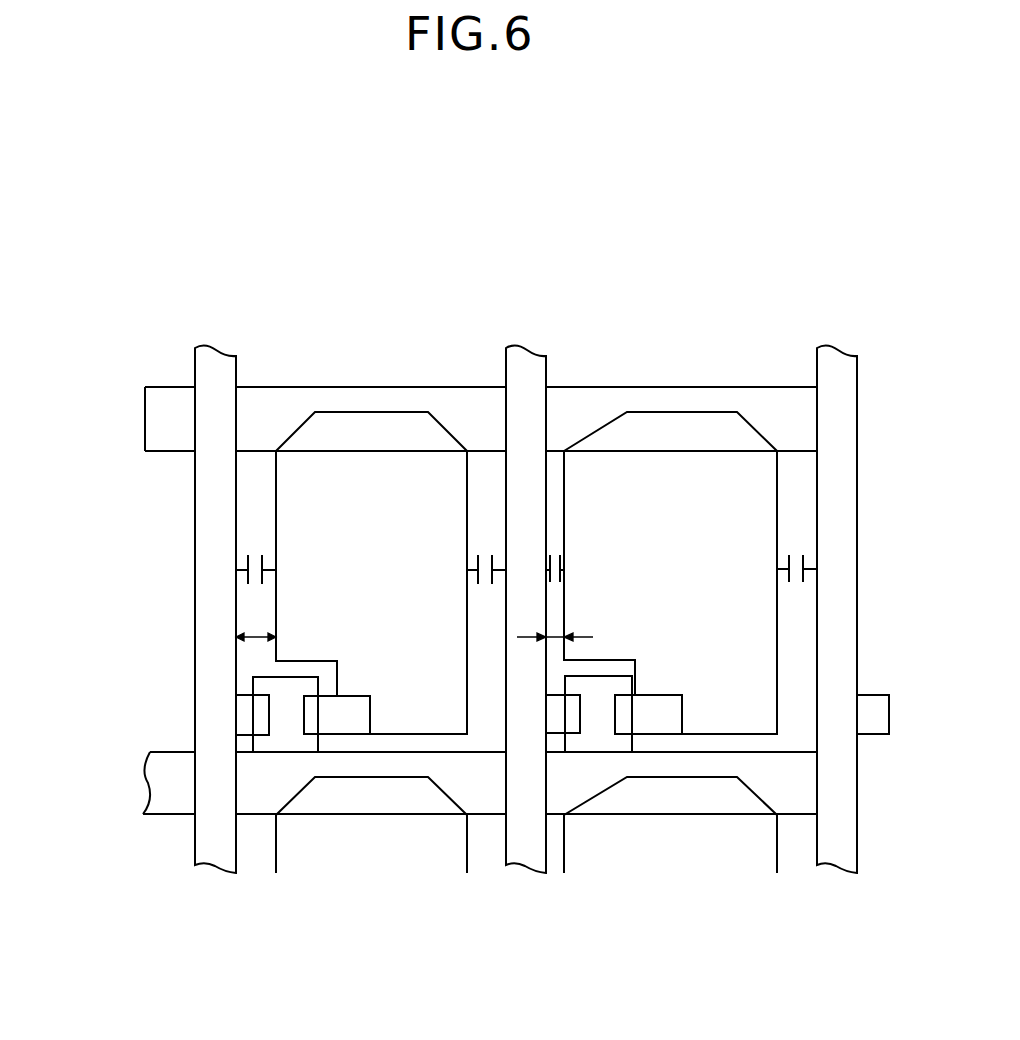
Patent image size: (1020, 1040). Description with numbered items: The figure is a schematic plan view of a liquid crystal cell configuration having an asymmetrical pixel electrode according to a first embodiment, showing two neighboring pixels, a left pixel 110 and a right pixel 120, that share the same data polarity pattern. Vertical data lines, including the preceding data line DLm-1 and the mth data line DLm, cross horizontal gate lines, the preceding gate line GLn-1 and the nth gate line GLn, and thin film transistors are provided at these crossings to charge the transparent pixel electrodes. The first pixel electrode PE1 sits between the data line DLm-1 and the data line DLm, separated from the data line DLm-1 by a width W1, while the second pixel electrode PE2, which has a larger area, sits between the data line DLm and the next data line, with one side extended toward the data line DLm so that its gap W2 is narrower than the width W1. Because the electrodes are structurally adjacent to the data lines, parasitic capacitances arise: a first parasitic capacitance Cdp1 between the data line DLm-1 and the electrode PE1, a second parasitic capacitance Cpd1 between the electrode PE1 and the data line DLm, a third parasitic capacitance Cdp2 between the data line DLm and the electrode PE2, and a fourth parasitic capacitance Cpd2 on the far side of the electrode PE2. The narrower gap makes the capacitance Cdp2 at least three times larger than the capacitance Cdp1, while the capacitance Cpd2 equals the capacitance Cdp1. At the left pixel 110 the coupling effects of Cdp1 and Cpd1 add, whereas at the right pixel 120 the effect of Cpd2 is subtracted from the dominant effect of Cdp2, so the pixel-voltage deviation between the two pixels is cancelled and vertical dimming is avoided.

The left pixel 110 is at (316, 522).
The right pixel 120 is at (667, 522).
The (m−1)th data line DLm-1 is at (218, 584).
The mth data line DLm is at (525, 584).
The (n−1)th gate line GLn-1 is at (416, 419).
The nth gate line GLn is at (434, 783).
The first pixel electrode PE1 is at (371, 573).
The second pixel electrode PE2 is at (670, 573).
The first parasitic capacitance Cdp1 is at (242, 578).
The second parasitic capacitance Cpd1 is at (478, 578).
The third parasitic capacitance Cdp2 is at (559, 579).
The fourth parasitic capacitance Cpd2 is at (790, 578).
The width between first pixel electrode and (m−1)th data line W1 is at (259, 625).
The distance between second pixel electrode and mth data line W2 is at (576, 641).